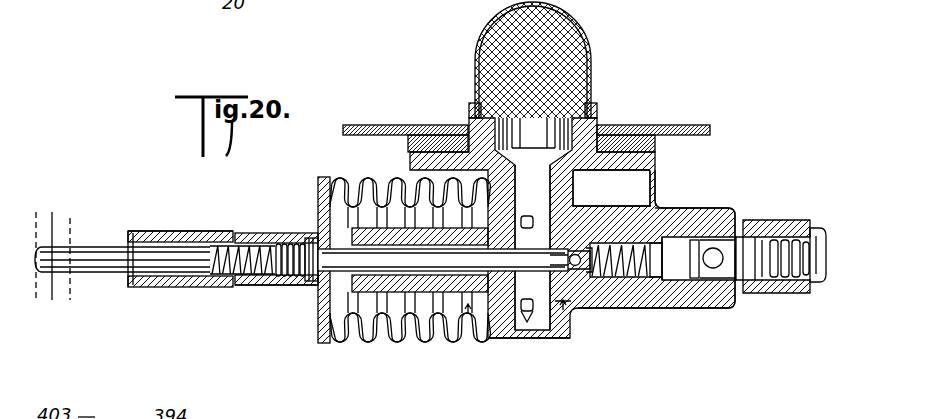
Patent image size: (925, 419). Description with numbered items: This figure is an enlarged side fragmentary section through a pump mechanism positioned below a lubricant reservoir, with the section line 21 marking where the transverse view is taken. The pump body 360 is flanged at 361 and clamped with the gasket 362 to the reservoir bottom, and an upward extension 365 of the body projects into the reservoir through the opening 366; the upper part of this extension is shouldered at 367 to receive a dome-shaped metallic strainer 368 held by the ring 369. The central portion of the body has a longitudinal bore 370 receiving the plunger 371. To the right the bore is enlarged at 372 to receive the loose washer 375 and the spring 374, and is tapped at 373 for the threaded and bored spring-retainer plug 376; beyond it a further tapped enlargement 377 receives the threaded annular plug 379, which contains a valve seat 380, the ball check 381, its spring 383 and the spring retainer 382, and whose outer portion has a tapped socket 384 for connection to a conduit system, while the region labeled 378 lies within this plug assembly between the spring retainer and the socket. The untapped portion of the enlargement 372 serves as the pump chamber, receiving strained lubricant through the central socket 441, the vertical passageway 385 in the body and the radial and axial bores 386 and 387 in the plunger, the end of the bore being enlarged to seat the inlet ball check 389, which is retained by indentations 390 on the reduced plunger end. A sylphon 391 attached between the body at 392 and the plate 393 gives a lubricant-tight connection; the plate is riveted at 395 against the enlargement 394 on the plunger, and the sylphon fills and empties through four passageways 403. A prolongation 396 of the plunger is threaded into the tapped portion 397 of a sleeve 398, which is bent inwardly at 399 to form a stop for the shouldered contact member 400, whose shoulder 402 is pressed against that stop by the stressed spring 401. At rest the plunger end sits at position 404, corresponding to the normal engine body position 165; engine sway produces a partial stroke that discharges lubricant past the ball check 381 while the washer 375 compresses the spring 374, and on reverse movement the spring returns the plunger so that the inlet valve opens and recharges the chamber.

The section line 21 is at (524, 335).
The normal engine body position 165 is at (55, 212).
The pump body 360 is at (670, 296).
The flange 361 is at (410, 166).
The gasket 362 is at (410, 148).
The upward extension 365 is at (600, 128).
The opening 366 is at (468, 124).
The shoulder 367 is at (594, 112).
The dome-shaped metallic strainer 368 is at (573, 22).
The ring 369 is at (473, 104).
The longitudinal bore 370 is at (416, 300).
The plunger 371 is at (368, 322).
The enlargement 372 is at (625, 285).
The tapped portion 373 is at (672, 310).
The spring 374 is at (683, 230).
The loose washer 375 is at (612, 283).
The spring-retainer plug 376 is at (735, 230).
The tapped enlargement 377 is at (724, 292).
The valve seat 378 is at (708, 300).
The threaded annular plug 379 is at (791, 236).
The valve seat 380 is at (718, 268).
The ball check 381 is at (740, 295).
The spring retainer 382 is at (790, 294).
The spring 383 is at (752, 240).
The tapped socket 384 is at (820, 228).
The vertical passageway 385 is at (530, 150).
The radial bore 386 is at (533, 300).
The axial bore 387 is at (548, 292).
The inlet ball check 389 is at (553, 305).
The indentations 390 is at (588, 268).
The sylphon 391 is at (340, 179).
The attachment point 392 is at (488, 198).
The plate 393 is at (318, 186).
The enlargement 394 is at (315, 287).
The rivet 395 is at (318, 300).
The prolongation 396 is at (278, 287).
The tapped portion 397 is at (296, 233).
The sleeve 398 is at (190, 231).
The inwardly bent stop 399 is at (134, 230).
The contact member 400 is at (89, 274).
The stressed spring 401 is at (217, 245).
The shoulder 402 is at (129, 288).
The passageways 403 is at (533, 221).
The rest position 404 is at (657, 182).
The central socket 441 is at (525, 118).